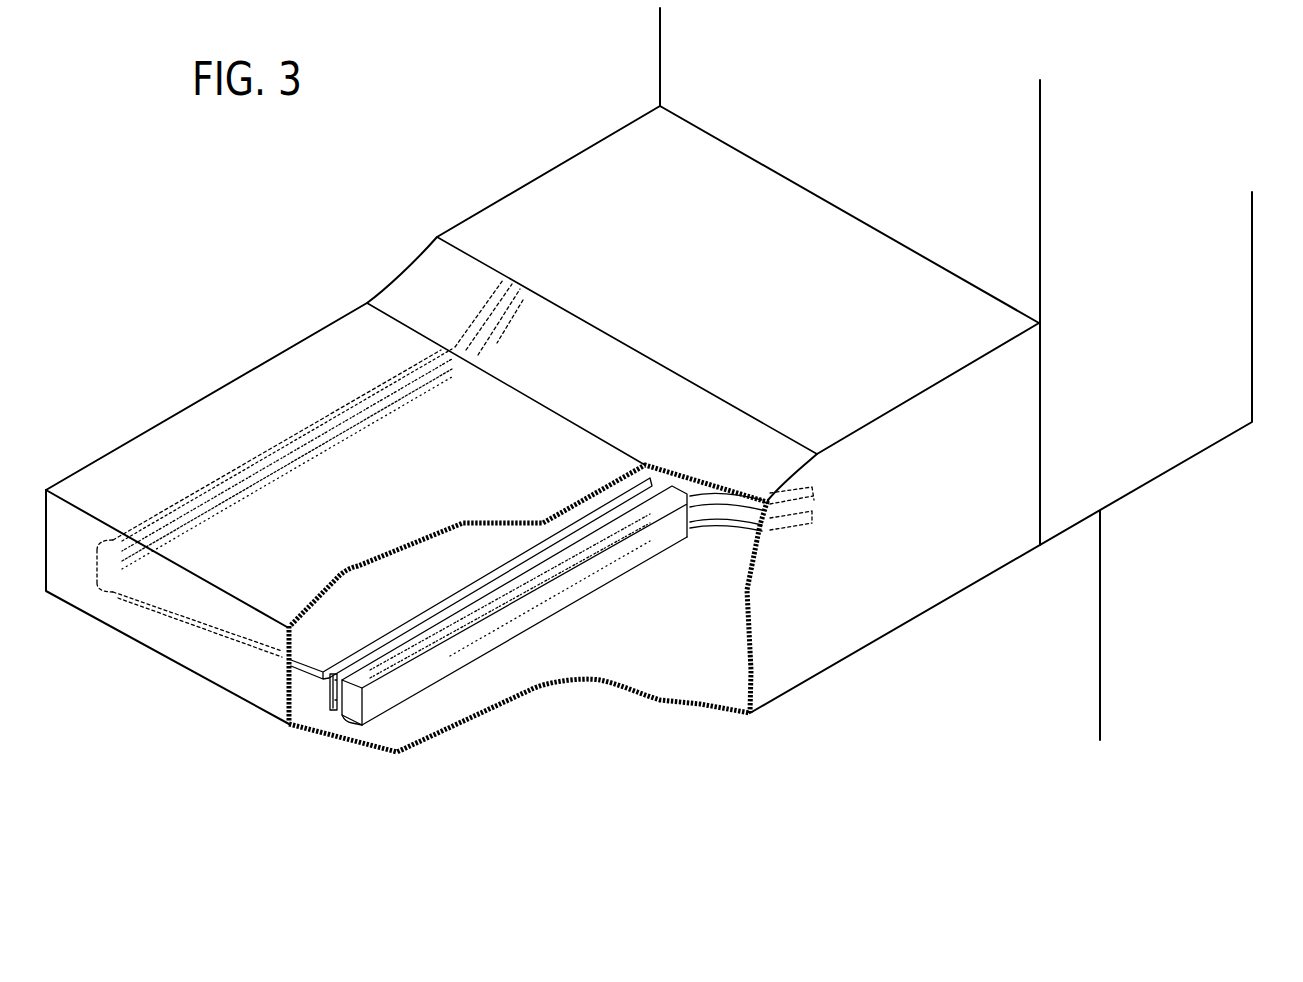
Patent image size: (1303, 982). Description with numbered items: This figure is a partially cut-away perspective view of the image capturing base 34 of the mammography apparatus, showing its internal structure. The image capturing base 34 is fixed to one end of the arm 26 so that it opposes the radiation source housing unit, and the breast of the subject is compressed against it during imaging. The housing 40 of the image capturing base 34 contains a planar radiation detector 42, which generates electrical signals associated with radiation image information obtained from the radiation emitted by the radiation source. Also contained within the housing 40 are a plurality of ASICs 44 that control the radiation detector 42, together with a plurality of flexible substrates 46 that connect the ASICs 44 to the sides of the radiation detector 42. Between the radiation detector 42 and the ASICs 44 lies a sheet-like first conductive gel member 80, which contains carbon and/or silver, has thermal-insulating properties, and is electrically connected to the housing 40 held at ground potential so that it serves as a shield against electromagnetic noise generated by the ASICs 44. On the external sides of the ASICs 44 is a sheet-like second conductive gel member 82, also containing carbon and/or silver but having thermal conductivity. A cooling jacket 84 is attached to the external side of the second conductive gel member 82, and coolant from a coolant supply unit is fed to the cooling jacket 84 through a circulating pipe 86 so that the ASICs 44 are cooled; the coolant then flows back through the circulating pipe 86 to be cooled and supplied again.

The arm 26 is at (1229, 377).
The image capturing base 34 is at (310, 193).
The housing 40 is at (993, 550).
The radiation detector 42 is at (317, 623).
The ASICs 44 is at (463, 647).
The flexible substrates 46 is at (432, 612).
The first conductive gel member 80 is at (329, 692).
The second conductive gel member 82 is at (356, 722).
The cooling jacket 84 is at (526, 626).
The circulating pipe 86 is at (722, 518).